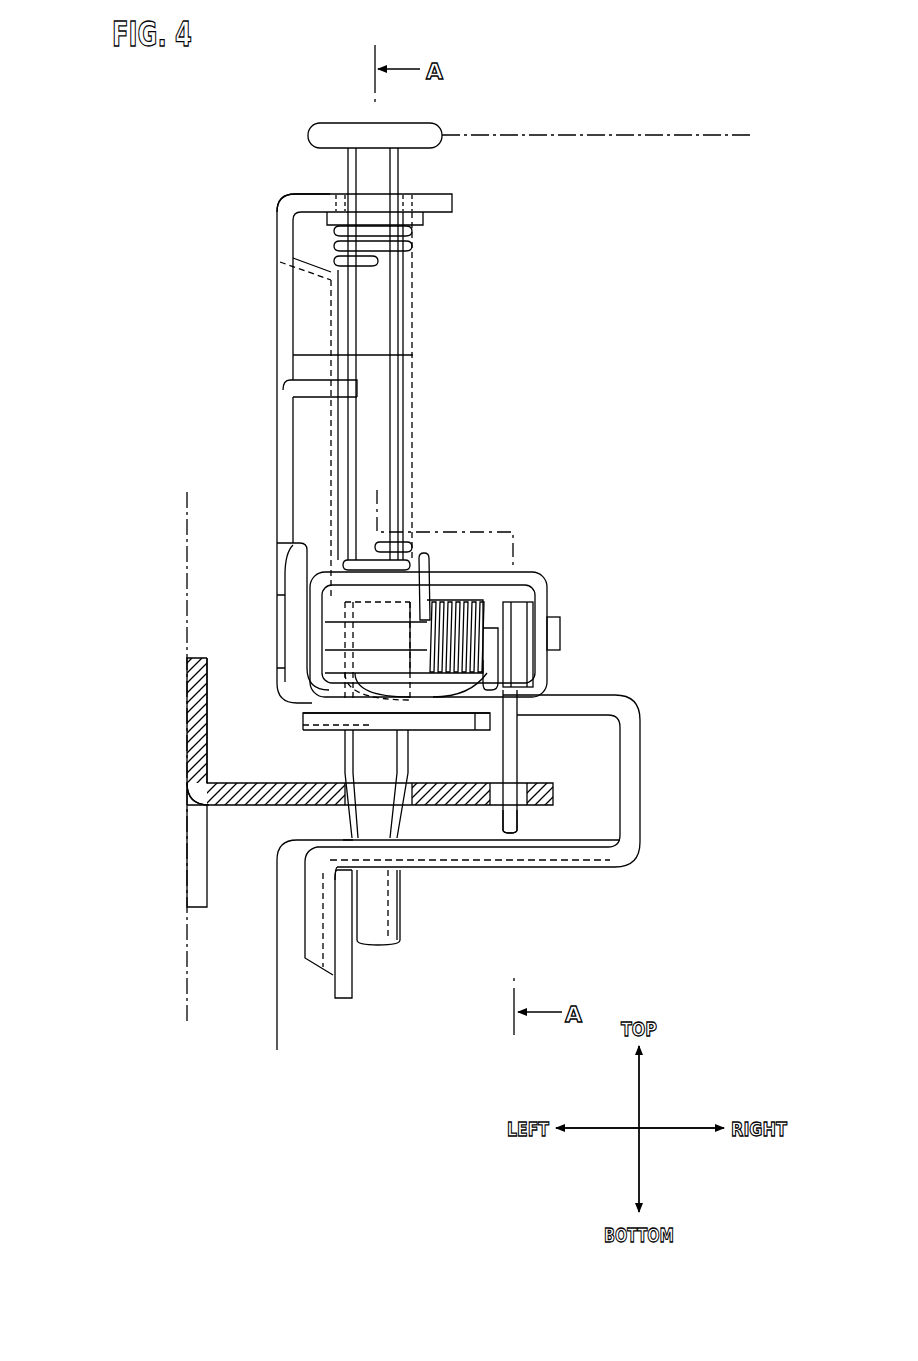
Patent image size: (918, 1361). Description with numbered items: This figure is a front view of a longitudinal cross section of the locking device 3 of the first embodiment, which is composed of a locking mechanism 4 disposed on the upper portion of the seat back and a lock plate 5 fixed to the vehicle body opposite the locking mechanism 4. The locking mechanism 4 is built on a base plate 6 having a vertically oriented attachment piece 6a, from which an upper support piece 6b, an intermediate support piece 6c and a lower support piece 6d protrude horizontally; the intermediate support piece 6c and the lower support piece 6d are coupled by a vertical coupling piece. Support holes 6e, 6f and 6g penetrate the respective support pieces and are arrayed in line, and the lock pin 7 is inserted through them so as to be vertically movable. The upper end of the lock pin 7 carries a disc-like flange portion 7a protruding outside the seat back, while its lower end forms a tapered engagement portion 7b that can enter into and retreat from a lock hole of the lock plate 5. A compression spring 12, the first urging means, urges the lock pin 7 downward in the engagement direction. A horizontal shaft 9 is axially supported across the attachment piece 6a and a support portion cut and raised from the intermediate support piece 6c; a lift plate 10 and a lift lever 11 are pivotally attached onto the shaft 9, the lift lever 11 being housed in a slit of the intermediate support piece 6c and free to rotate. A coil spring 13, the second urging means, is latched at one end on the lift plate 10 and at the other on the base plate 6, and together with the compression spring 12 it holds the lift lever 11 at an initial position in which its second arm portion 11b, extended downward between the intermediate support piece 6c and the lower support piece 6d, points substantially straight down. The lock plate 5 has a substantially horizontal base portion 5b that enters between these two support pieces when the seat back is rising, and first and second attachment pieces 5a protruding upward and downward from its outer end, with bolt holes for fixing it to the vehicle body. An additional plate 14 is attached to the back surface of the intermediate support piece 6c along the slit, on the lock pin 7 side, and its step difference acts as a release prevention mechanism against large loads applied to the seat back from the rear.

The locking device 3 is at (150, 520).
The locking mechanism 4 is at (266, 414).
The lock plate 5 is at (178, 741).
The attachment piece 5a is at (187, 690).
The base portion 5b is at (455, 806).
The base plate 6 is at (276, 330).
The attachment piece 6a is at (282, 282).
The upper support piece 6b is at (312, 196).
The intermediate support piece 6c is at (568, 700).
The lower support piece 6d is at (430, 873).
The support hole 6e is at (420, 207).
The support hole 6f is at (325, 715).
The support hole 6g is at (343, 873).
The lock pin 7 is at (392, 386).
The flange portion 7a is at (338, 124).
The engagement portion 7b is at (352, 806).
The shaft 9 is at (482, 640).
The lift plate 10 is at (455, 576).
The lift lever 11 is at (520, 735).
The second arm portion 11b is at (515, 818).
The compression spring 12 is at (408, 254).
The coil spring 13 is at (528, 605).
The additional plate 14 is at (437, 727).